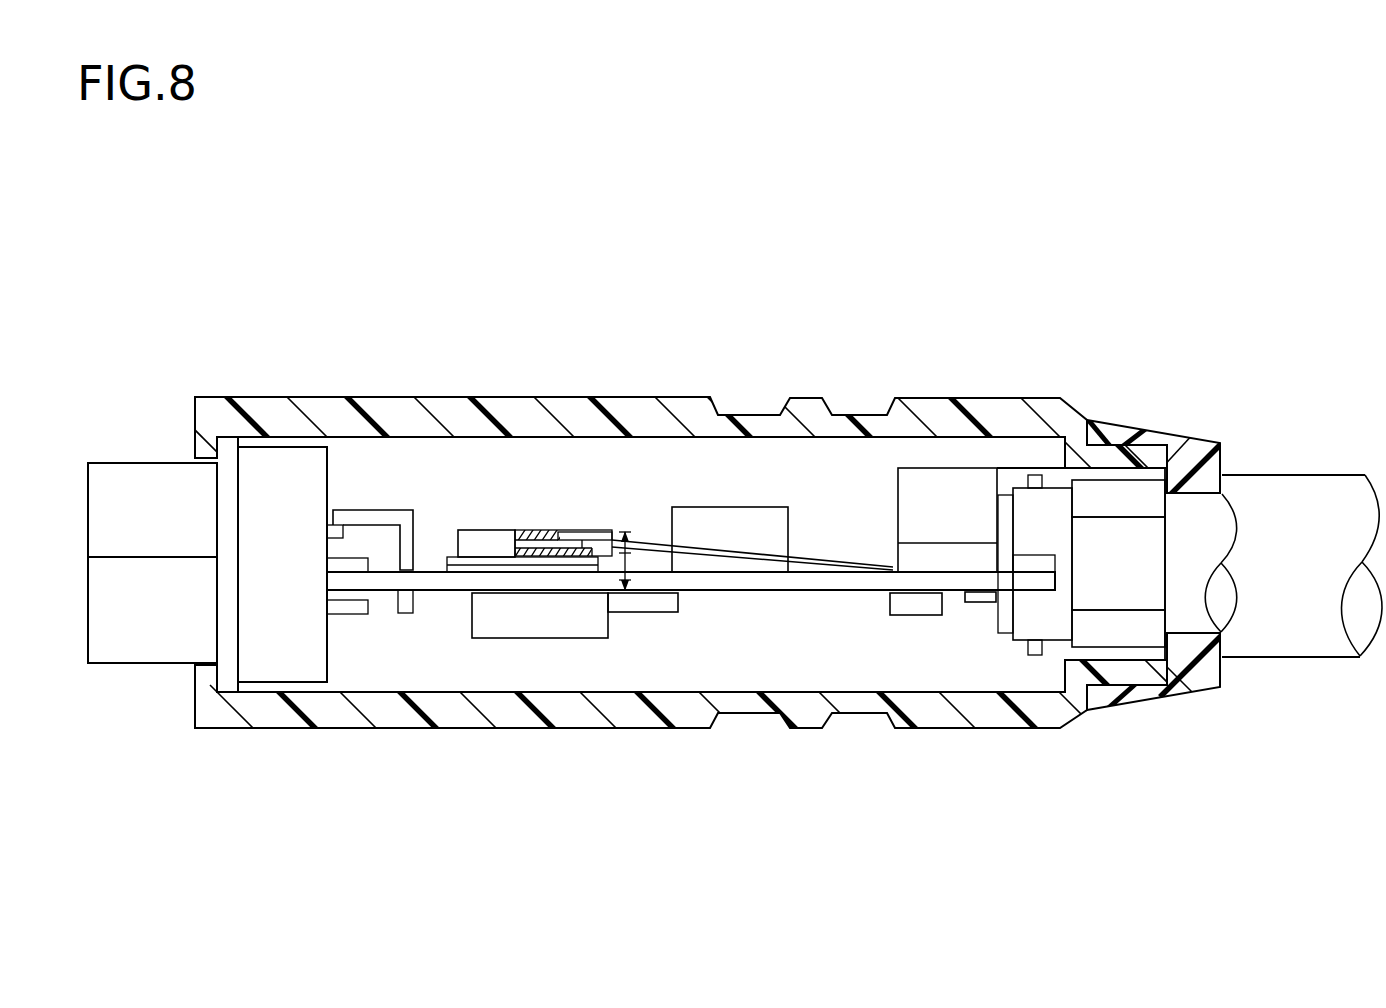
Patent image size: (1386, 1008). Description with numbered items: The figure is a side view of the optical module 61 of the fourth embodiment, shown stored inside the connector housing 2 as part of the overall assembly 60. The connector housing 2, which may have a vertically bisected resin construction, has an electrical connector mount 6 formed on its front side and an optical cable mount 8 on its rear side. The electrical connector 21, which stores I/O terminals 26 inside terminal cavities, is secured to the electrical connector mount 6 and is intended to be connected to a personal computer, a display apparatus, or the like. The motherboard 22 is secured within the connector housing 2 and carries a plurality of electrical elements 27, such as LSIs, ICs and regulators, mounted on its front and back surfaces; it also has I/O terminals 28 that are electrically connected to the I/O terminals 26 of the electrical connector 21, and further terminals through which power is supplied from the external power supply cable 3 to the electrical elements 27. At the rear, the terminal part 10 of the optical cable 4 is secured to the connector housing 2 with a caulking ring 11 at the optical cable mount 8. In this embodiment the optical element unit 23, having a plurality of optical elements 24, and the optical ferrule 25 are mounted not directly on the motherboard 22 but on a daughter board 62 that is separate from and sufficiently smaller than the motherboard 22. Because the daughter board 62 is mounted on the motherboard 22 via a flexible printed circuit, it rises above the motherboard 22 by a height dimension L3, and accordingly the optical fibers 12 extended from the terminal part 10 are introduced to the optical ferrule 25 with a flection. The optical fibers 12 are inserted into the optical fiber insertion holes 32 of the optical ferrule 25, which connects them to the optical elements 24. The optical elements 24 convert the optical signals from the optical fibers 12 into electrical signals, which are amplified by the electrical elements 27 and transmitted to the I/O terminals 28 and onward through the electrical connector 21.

The sensor device 60 is at (866, 222).
The connector housing 2 is at (270, 397).
The electrical connector mount 6 is at (194, 456).
The optical module 61 is at (613, 452).
The electrical connector 21 is at (121, 462).
The I/O terminals 26 is at (327, 535).
The I/O terminals 28 is at (365, 510).
The motherboard 22 is at (782, 592).
The daughter board 62 is at (450, 575).
The optical element unit 23 is at (445, 520).
The optical elements 24 is at (481, 541).
The optical ferrule 25 is at (525, 534).
The optical fiber insertion holes 32 is at (550, 538).
The height dimension L3 is at (644, 538).
The optical fibers 12 is at (812, 557).
The electrical elements 27 is at (700, 507).
The terminal part 10 is at (953, 553).
The caulking ring 11 is at (1050, 490).
The optical cable mount 8 is at (1183, 442).
The optical cable 4 is at (1195, 625).
The external power supply cable 3 is at (1305, 475).